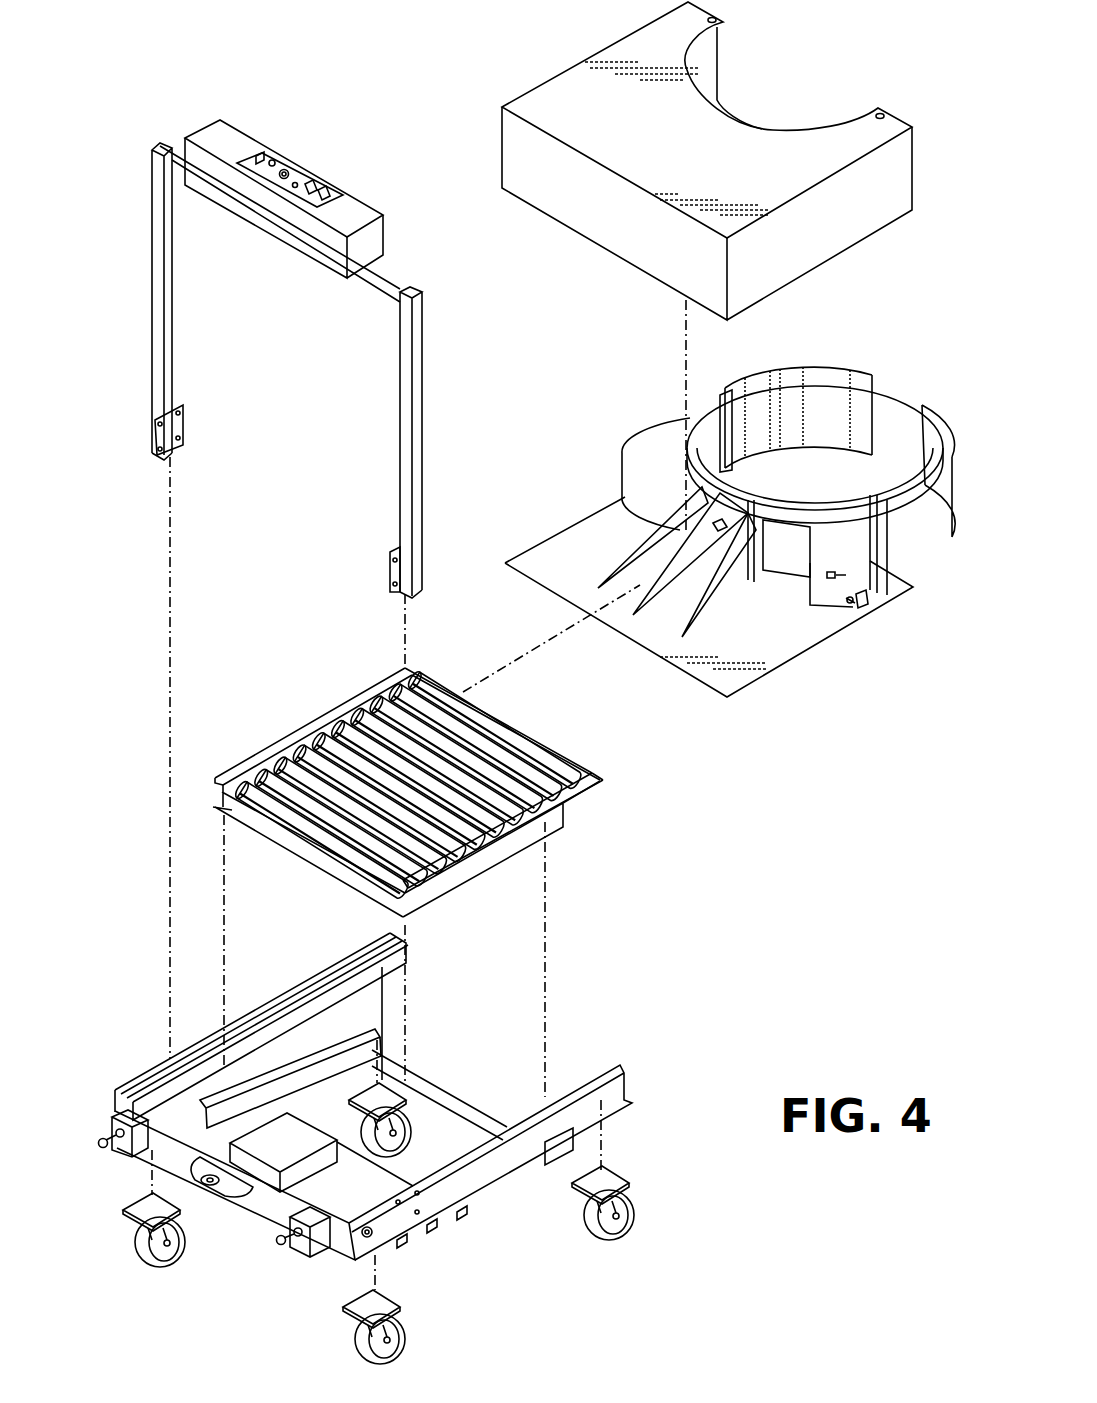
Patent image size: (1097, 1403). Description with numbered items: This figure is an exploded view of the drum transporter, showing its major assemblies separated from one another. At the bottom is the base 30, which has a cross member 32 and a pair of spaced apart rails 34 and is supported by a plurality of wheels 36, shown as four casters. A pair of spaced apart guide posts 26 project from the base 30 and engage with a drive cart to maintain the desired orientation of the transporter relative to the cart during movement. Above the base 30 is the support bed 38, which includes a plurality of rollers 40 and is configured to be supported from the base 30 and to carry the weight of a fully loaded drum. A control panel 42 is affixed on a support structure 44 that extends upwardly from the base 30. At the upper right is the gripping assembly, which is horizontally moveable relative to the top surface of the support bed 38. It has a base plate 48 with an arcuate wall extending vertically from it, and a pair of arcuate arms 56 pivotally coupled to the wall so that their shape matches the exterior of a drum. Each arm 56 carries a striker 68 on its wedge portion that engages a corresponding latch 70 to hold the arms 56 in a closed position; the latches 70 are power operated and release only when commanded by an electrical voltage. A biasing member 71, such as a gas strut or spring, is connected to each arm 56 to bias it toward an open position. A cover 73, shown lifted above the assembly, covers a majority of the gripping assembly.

The guide posts 26 is at (103, 1147).
The base 30 is at (385, 1132).
The cross member 32 is at (262, 1202).
The rails 34 is at (138, 1080).
The wheels 36 is at (400, 1112).
The support bed 38 is at (408, 762).
The rollers 40 is at (433, 690).
The control panel 42 is at (233, 150).
The support structure 44 is at (152, 325).
The base plate 48 is at (755, 630).
The arms 56 is at (822, 382).
The striker 68 is at (836, 607).
The latch 70 is at (877, 600).
The biasing member 71 is at (850, 603).
The cover 73 is at (560, 105).